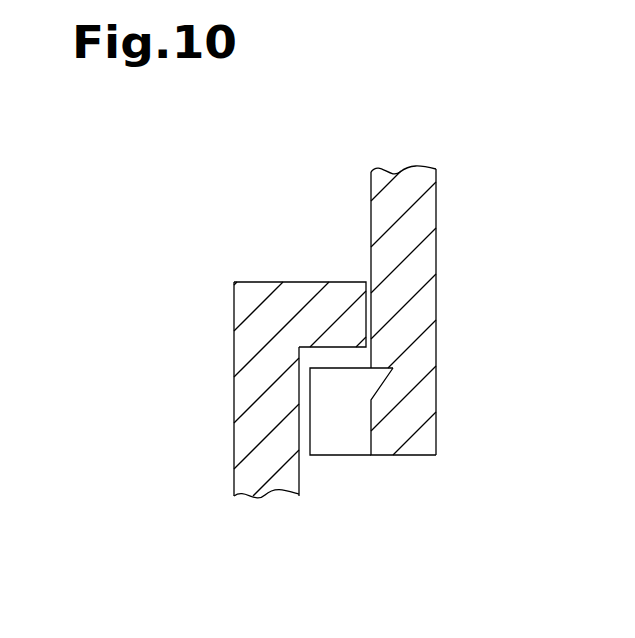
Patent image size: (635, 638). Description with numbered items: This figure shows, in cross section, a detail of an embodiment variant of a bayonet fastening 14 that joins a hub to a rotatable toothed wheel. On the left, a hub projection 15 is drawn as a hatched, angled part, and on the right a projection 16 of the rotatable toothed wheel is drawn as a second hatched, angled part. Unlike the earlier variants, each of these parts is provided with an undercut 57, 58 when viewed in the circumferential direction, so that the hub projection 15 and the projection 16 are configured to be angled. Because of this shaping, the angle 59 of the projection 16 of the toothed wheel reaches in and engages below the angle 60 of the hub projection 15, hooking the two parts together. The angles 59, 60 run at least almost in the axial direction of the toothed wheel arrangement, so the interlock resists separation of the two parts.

The bayonet fastening 14 is at (478, 298).
The hub projections 15 is at (235, 398).
The projections of the rotatable toothed wheel 16 is at (448, 278).
The undercut 57 is at (327, 367).
The undercut 58 is at (362, 372).
The angles of the projections of the rotatable toothed wheel 59 is at (379, 407).
The angles of the hub projections 60 is at (305, 283).